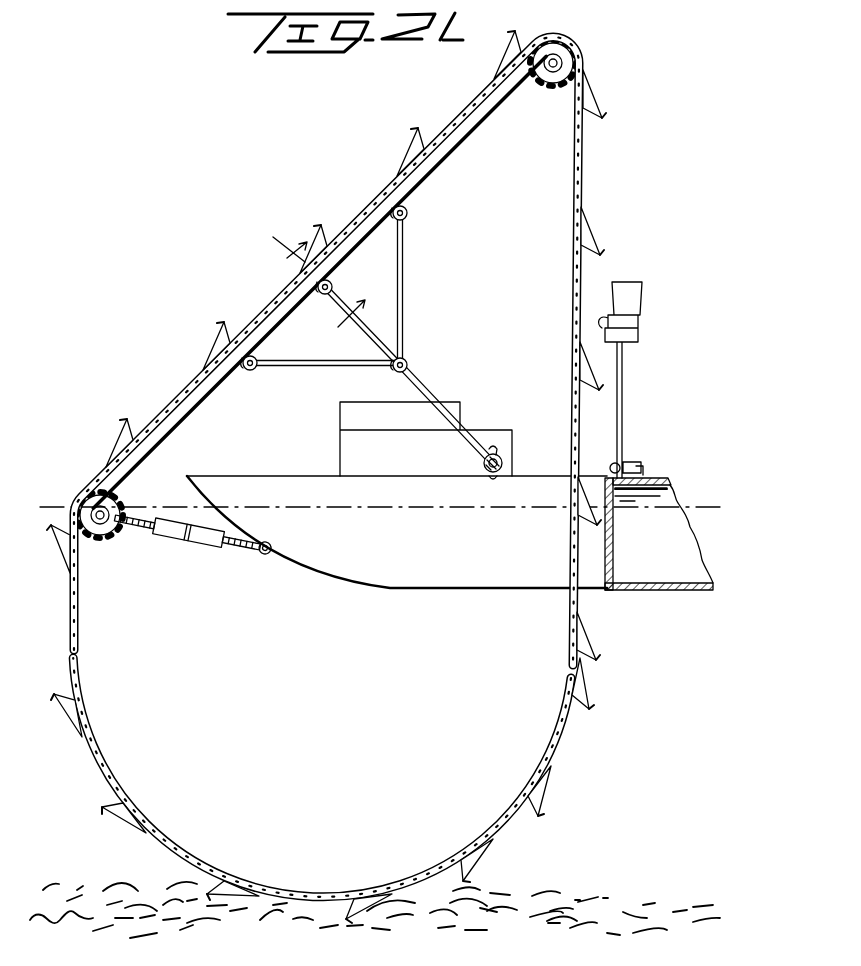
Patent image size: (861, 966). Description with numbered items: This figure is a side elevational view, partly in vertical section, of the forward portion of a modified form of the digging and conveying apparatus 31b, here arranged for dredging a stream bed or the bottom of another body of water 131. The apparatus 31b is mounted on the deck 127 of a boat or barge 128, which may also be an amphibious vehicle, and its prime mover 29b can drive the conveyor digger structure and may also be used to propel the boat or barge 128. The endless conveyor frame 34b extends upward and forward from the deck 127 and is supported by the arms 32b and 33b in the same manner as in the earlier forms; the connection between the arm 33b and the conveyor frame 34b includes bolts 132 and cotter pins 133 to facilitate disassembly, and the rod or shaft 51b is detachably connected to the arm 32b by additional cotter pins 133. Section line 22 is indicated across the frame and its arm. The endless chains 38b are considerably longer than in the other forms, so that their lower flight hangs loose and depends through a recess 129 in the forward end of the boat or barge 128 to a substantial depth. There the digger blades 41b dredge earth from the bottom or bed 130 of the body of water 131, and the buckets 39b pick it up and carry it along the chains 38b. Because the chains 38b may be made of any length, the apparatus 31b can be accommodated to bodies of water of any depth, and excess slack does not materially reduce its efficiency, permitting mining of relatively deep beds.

The section line 22 is at (311, 293).
The prime mover 29b is at (426, 439).
The apparatus 31b is at (596, 194).
The arm 32b is at (438, 394).
The arm 33b is at (405, 289).
The endless conveyor frame 34b is at (468, 144).
The endless chains 38b is at (556, 756).
The buckets 39b is at (543, 802).
The digger blades 41b is at (541, 818).
The rod or shaft 51b is at (412, 364).
The deck 127 is at (652, 477).
The boat or barge 128 is at (703, 598).
The recess 129 is at (605, 577).
The bottom or bed 130 is at (652, 904).
The body of water 131 is at (708, 500).
The bolts 132 is at (410, 213).
The cotter pins 133 is at (318, 288).